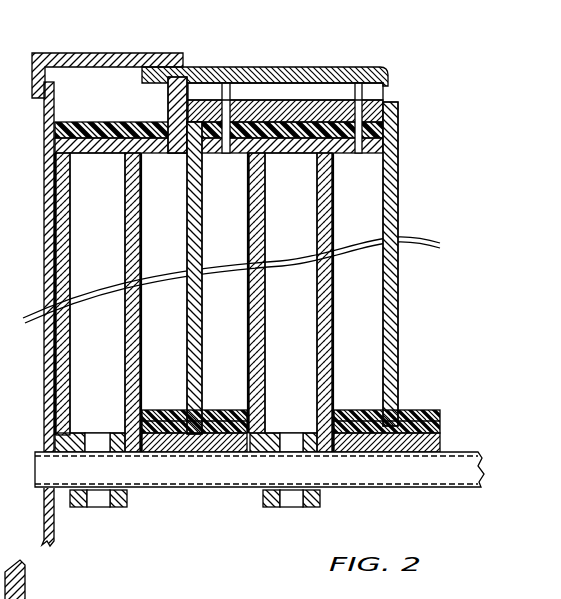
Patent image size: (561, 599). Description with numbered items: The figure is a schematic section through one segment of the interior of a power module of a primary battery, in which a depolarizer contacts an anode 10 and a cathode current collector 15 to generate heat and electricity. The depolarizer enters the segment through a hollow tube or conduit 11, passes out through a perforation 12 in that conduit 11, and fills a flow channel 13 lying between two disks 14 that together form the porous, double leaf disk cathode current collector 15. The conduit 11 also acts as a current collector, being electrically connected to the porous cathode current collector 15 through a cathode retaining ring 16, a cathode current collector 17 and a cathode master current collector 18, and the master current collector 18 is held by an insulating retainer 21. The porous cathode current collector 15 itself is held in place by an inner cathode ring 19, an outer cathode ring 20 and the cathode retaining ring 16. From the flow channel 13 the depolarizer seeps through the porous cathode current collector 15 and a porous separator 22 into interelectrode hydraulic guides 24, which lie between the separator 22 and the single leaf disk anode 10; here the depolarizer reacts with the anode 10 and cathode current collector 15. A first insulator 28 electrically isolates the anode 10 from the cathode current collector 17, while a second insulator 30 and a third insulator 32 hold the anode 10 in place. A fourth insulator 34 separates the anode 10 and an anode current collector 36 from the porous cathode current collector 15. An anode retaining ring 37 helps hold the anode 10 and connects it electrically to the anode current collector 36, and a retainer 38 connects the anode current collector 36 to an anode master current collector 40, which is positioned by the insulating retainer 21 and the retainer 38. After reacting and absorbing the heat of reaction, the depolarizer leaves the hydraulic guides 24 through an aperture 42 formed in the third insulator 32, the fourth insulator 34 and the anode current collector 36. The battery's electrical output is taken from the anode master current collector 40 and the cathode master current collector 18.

The anode 10 is at (190, 212).
The hollow tube or conduit 11 is at (467, 452).
The perforation 12 is at (102, 448).
The flow channel 13 is at (78, 356).
The disk 14 is at (67, 216).
The cathode current collector 15 is at (333, 314).
The cathode retaining ring 16 is at (125, 440).
The cathode current collector 17 is at (180, 447).
The cathode master current collector 18 is at (48, 200).
The inner cathode ring 19 is at (75, 434).
The outer cathode ring 20 is at (105, 148).
The insulating retainer 21 is at (121, 55).
The porous separator 22 is at (55, 230).
The interelectrode hydraulic guide 24 is at (155, 257).
The first insulator 28 is at (170, 423).
The second insulator 30 is at (207, 415).
The third insulator 32 is at (148, 150).
The fourth insulator 34 is at (92, 130).
The anode current collector 36 is at (253, 99).
The anode retaining ring 37 is at (198, 68).
The retainer 38 is at (168, 104).
The anode master current collector 40 is at (288, 67).
The aperture 42 is at (227, 98).